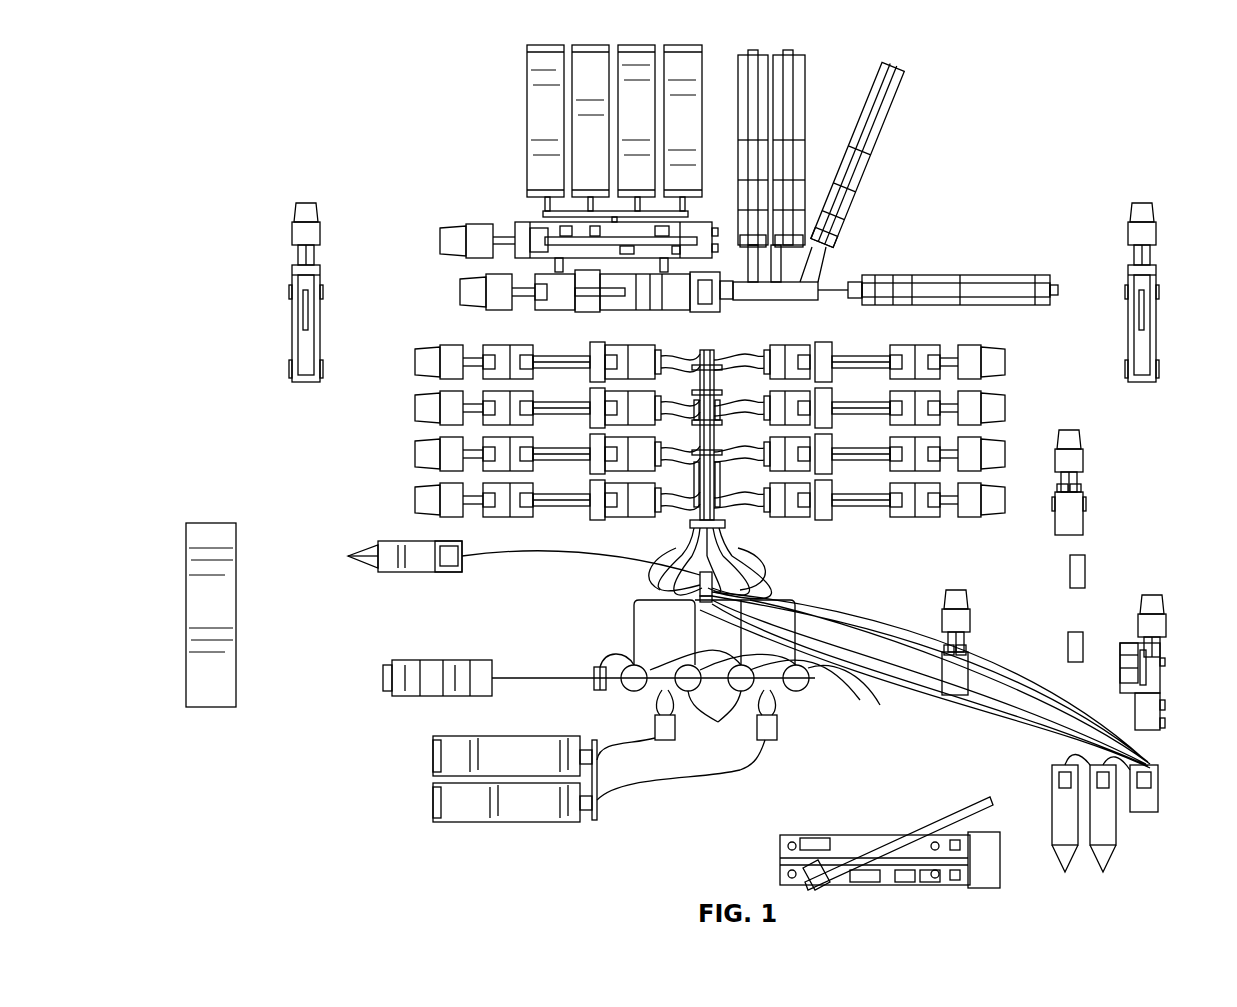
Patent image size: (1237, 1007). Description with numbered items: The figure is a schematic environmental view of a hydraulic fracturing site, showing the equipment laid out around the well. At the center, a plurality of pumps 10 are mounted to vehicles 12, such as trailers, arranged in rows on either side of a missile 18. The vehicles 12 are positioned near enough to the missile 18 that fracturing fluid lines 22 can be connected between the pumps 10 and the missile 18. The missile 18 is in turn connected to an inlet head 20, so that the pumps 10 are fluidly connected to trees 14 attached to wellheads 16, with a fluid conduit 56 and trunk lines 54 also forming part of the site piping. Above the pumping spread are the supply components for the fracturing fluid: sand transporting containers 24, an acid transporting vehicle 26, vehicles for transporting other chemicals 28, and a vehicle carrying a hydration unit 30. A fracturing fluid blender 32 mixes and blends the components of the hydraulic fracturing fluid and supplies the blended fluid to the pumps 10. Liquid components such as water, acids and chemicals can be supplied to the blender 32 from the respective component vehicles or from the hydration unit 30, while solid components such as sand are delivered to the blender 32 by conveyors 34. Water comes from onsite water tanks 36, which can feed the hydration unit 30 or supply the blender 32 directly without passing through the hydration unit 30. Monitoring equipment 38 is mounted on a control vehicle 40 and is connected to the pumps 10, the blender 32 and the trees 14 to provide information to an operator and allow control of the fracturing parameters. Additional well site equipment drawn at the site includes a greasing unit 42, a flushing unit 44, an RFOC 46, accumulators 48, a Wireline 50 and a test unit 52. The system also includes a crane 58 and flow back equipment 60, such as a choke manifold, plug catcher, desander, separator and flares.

The pumps 10 is at (818, 360).
The vehicles 12 is at (1008, 345).
The trees 14 is at (636, 665).
The wellheads 16 is at (695, 671).
The missile 18 is at (720, 358).
The inlet head 20 is at (748, 548).
The fracturing fluid lines 22 is at (682, 358).
The sand transporting containers 24 is at (880, 134).
The acid transporting vehicle 26 is at (1157, 316).
The vehicles for transporting other chemicals 28 is at (322, 350).
The hydration unit 30 is at (512, 208).
The fracturing fluid blender 32 is at (740, 302).
The conveyors 34 is at (822, 270).
The water tanks 36 is at (527, 110).
The monitoring equipment 38 is at (1160, 676).
The control vehicle 40 is at (1162, 590).
The greasing unit 42 is at (1070, 860).
The flushing unit 44 is at (1108, 852).
The RFOC 46 is at (1158, 800).
The accumulators 48 is at (1086, 572).
The Wireline 50 is at (442, 660).
The test unit 52 is at (395, 572).
The trunk lines 54 is at (968, 618).
The fluid conduit 56 is at (634, 640).
The crane 58 is at (835, 848).
The flow back equipment 60 is at (612, 826).